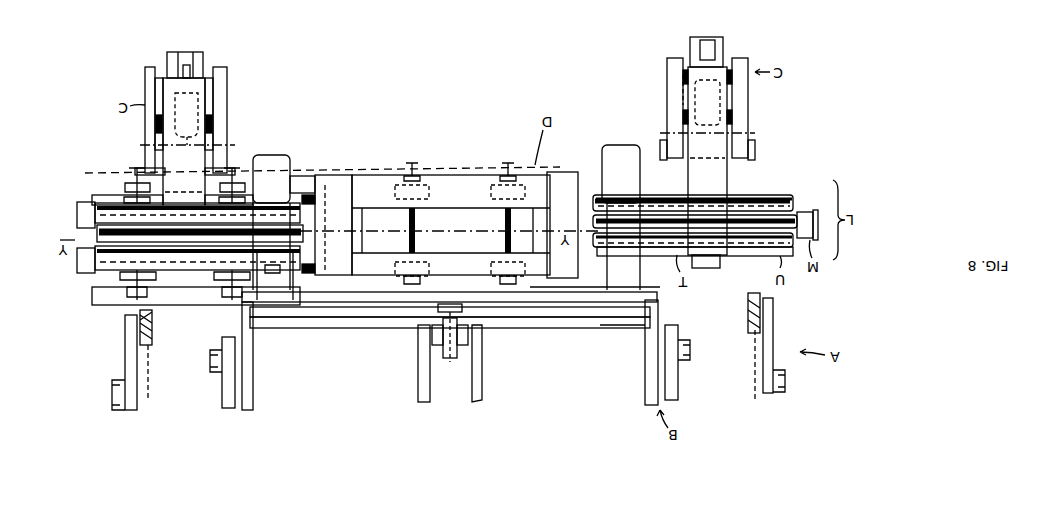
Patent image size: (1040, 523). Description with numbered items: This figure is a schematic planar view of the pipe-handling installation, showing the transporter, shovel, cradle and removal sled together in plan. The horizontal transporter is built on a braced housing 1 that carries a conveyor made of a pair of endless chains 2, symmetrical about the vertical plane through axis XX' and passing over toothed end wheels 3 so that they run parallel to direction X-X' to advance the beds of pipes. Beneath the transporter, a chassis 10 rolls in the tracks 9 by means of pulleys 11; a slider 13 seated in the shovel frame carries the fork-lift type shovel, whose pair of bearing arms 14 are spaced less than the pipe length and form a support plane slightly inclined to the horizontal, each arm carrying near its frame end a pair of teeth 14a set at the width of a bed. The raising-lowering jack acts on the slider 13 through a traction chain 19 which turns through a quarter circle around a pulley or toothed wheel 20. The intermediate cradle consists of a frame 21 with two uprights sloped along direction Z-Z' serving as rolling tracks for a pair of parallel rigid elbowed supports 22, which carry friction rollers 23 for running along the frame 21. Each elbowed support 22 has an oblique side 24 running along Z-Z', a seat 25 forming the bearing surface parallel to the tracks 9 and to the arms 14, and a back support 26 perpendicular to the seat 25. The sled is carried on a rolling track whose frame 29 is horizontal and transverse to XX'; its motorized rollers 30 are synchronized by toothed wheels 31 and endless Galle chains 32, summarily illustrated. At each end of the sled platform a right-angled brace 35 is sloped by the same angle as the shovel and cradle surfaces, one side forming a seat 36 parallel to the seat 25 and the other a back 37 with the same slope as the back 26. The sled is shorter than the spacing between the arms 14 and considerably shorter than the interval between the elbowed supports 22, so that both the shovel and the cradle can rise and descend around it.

The housing 1 is at (283, 260).
The endless chains 2 is at (155, 385).
The toothed end wheels 3 is at (748, 310).
The tracks 9 is at (222, 390).
The chassis 10 is at (253, 380).
The pulleys 11 is at (446, 232).
The slider 13 is at (478, 300).
The bearing arms 14 is at (268, 165).
The teeth 14a is at (620, 290).
The traction chain 19 is at (418, 373).
The toothed wheel 20 is at (455, 355).
The frame 21 is at (745, 107).
The elbowed supports 22 is at (680, 92).
The friction rollers 23 is at (667, 105).
The oblique side 24 is at (203, 120).
The seat 25 is at (165, 144).
The back support 26 is at (195, 272).
The frame 29 is at (305, 172).
The motorized rollers 30 is at (392, 195).
The toothed wheels 31 is at (510, 165).
The endless Galle chains 32 is at (400, 162).
The right-angled brace 35 is at (588, 185).
The seat 36 is at (348, 236).
The back support 37 is at (556, 292).